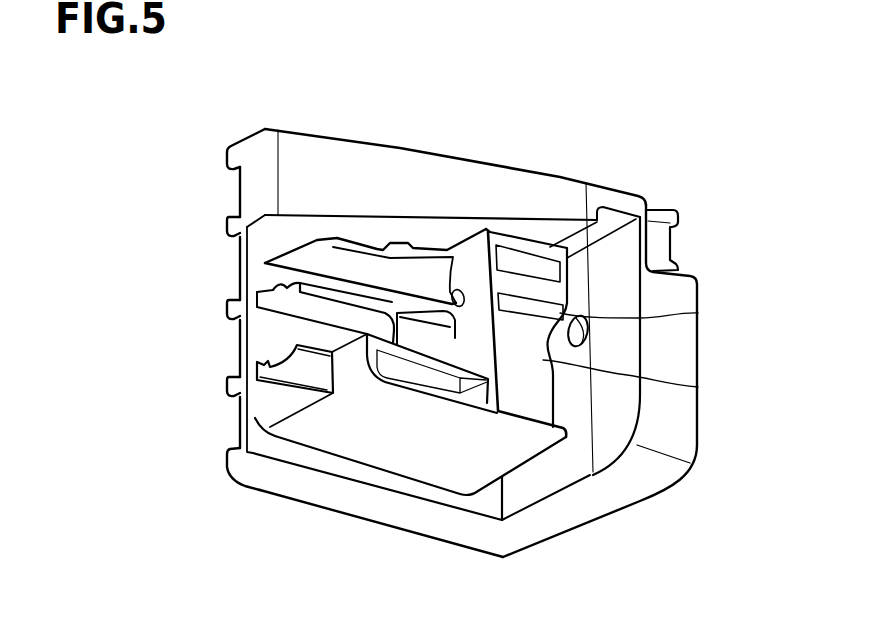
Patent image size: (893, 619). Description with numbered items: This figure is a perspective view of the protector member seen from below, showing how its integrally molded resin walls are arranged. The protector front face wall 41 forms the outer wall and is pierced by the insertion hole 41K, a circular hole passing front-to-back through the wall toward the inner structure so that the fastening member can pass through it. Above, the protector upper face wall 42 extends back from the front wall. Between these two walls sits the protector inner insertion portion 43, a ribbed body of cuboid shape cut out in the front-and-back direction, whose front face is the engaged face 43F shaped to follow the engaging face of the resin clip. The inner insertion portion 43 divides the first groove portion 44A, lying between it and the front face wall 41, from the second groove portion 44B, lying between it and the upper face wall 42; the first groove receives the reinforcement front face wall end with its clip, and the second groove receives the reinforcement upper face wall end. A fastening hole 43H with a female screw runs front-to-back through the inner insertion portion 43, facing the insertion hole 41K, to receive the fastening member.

The protector front face wall 41 is at (699, 349).
The insertion hole 41K is at (698, 313).
The protector upper face wall 42 is at (424, 151).
The protector inner insertion portion 43 is at (373, 458).
The engaged face 43F is at (698, 387).
The fastening hole 43H is at (460, 287).
The first groove portion 44A is at (548, 478).
The second groove portion 44B is at (353, 235).